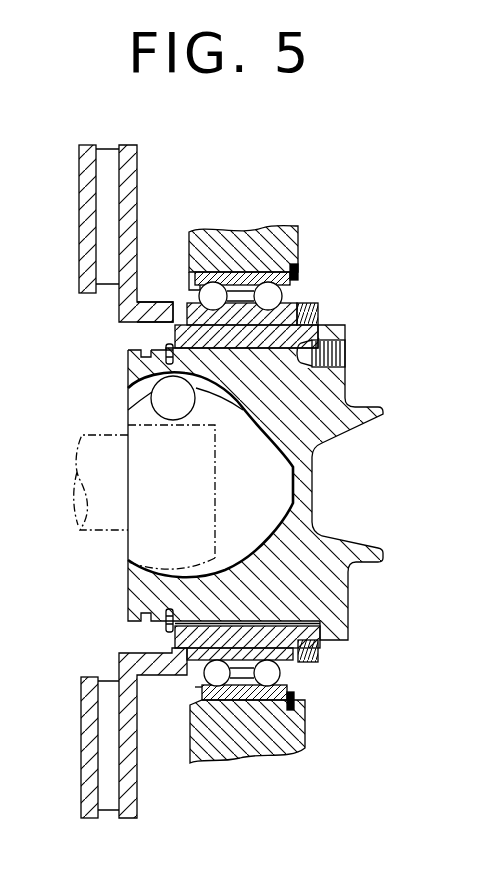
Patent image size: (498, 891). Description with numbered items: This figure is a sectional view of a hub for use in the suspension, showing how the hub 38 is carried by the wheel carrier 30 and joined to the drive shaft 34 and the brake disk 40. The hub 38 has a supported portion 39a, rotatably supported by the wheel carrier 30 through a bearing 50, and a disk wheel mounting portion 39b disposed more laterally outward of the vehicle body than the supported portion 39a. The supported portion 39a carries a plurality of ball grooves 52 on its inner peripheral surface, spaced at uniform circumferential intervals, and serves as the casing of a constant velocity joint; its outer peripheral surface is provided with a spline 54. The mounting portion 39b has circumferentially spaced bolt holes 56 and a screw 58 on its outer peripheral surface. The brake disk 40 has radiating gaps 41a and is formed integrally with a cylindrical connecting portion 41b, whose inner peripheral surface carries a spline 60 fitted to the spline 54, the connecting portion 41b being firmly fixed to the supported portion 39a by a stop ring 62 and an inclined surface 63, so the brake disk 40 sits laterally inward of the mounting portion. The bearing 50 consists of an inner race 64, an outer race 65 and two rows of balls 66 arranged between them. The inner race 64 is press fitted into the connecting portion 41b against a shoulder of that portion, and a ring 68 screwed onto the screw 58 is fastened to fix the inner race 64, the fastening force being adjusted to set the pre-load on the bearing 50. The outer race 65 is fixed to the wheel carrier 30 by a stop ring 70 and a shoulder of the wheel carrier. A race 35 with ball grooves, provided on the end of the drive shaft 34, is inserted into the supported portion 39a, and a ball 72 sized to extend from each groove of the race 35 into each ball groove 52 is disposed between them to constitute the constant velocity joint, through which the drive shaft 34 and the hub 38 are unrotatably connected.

The wheel carrier 30 is at (270, 236).
The drive shaft 34 is at (104, 513).
The race 35 is at (130, 579).
The hub 38 is at (348, 385).
The supported portion 39a is at (313, 530).
The disk wheel mounting portion 39b is at (330, 584).
The brake disk 40 is at (79, 190).
The radiating gaps 41a is at (105, 163).
The connecting portion 41b is at (176, 322).
The bearing 50 is at (290, 290).
The ball grooves 52 is at (132, 399).
The spline 54 is at (180, 626).
The bolt holes 56 is at (346, 350).
The screw 58 is at (335, 649).
The spline 60 is at (128, 360).
The stop ring 62 is at (165, 348).
The inclined surface 63 is at (300, 626).
The inner race 64 is at (232, 298).
The outer race 65 is at (238, 298).
The balls 66 is at (297, 250).
The ring 68 is at (318, 312).
The stop ring 70 is at (299, 262).
The ball 72 is at (173, 405).